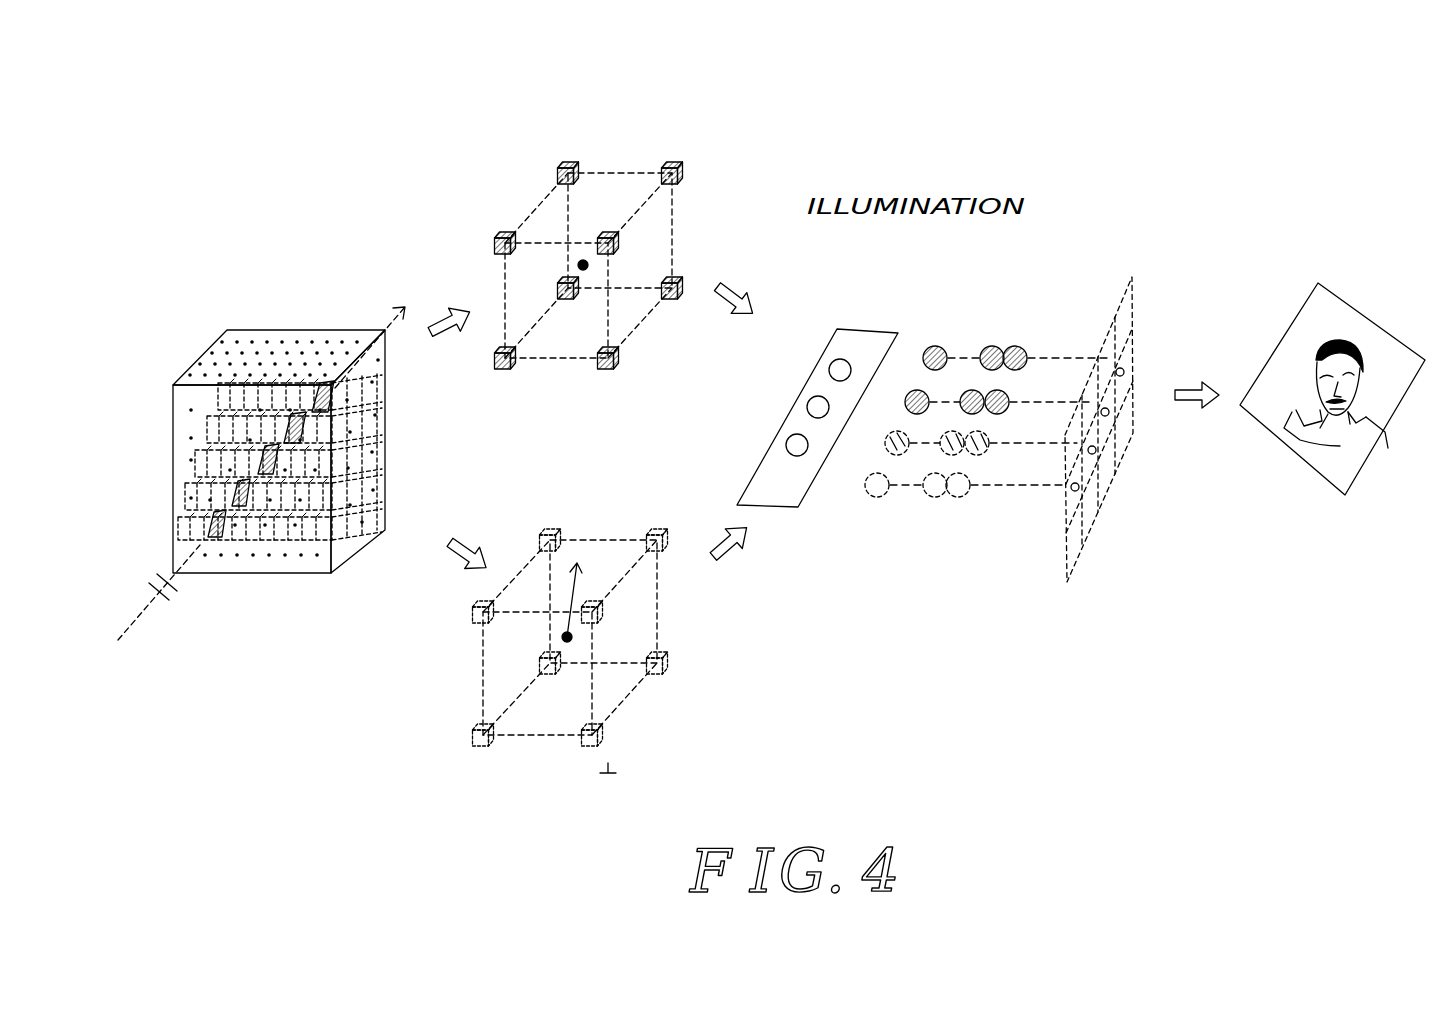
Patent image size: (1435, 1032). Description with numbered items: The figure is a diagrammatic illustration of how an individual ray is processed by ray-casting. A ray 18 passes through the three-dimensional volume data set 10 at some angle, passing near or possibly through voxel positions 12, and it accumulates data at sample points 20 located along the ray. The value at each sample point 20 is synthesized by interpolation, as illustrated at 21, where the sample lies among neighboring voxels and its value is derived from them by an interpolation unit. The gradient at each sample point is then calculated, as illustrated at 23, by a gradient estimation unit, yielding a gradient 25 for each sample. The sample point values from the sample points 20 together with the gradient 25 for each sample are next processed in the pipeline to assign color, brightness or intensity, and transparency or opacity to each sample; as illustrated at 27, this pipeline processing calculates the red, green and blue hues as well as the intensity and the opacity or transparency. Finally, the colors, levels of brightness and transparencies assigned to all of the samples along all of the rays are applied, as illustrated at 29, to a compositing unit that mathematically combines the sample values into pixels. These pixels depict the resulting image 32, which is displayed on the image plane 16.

The three-dimensional volume data set 10 is at (284, 466).
The voxel positions 12 is at (267, 343).
The image plane 16 is at (1315, 409).
The ray 18 is at (148, 628).
The sample points 20 is at (384, 310).
The interpolation 21 is at (648, 242).
The gradient estimation 23 is at (578, 669).
The gradient 25 is at (575, 583).
The color, intensity and opacity assignment 27 is at (888, 318).
The compositing 29 is at (910, 445).
The resulting image 32 is at (1318, 345).